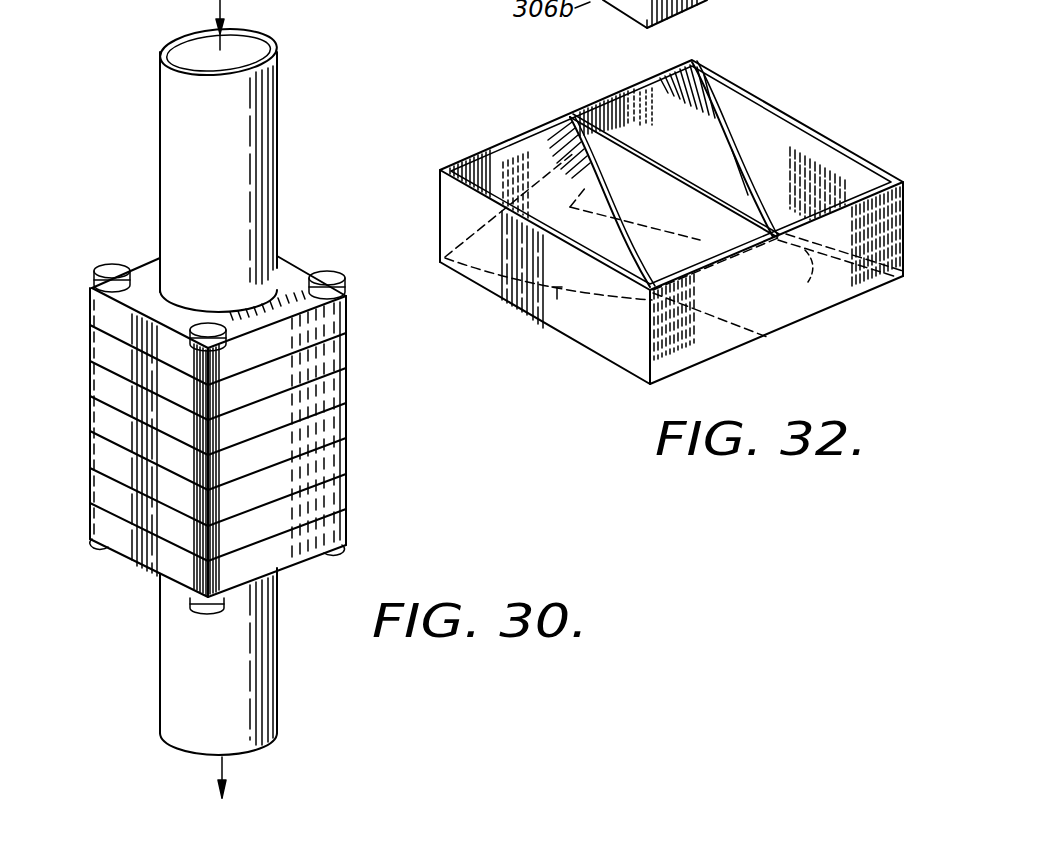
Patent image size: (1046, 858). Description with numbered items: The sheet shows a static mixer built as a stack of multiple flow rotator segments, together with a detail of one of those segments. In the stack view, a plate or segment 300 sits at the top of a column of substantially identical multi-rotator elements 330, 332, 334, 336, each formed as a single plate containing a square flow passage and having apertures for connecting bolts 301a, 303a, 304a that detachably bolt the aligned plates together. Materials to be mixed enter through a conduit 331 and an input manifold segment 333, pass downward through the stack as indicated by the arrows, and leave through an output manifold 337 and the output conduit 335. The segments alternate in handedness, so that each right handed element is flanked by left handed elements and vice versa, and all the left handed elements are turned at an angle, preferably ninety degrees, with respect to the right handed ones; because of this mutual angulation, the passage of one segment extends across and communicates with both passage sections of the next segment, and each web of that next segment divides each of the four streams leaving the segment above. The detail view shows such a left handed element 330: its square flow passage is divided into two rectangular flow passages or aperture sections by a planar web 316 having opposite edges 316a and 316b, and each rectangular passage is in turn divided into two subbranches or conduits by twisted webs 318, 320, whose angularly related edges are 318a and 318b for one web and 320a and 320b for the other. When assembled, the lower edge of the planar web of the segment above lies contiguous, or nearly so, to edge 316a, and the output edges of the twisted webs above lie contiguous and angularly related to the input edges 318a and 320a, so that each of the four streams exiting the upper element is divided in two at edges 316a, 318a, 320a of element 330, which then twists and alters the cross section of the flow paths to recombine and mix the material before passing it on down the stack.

In FIG. 30, the plate or segment 300 is at (95, 343).
In FIG. 30, the connecting bolt 301a is at (112, 263).
In FIG. 30, the connecting bolt 303a is at (333, 271).
In FIG. 30, the connecting bolt 304a is at (233, 292).
In FIG. 30, the left handed multiple rotator element 330 is at (95, 380).
In FIG. 32, the left handed multiple rotator element 330 is at (430, 198).
In FIG. 30, the conduit 331 is at (272, 126).
In FIG. 30, the multi-rotator element 332 is at (95, 414).
In FIG. 30, the input manifold segment 333 is at (336, 317).
In FIG. 30, the multi-rotator element 334 is at (95, 449).
In FIG. 30, the output conduit 335 is at (265, 690).
In FIG. 30, the multi-rotator element 336 is at (95, 484).
In FIG. 30, the output manifold 337 is at (337, 527).
In FIG. 32, the planar web 316 is at (580, 117).
In FIG. 32, the edge of planar web 316a is at (661, 167).
In FIG. 32, the edge of planar web 316b is at (673, 285).
In FIG. 32, the twisted web 318 is at (540, 145).
In FIG. 32, the edge of twisted web 318a is at (609, 210).
In FIG. 32, the edge of twisted web 318b is at (555, 300).
In FIG. 32, the twisted web 320 is at (683, 92).
In FIG. 32, the edge of twisted web 320a is at (746, 174).
In FIG. 32, the edge of twisted web 320b is at (778, 285).